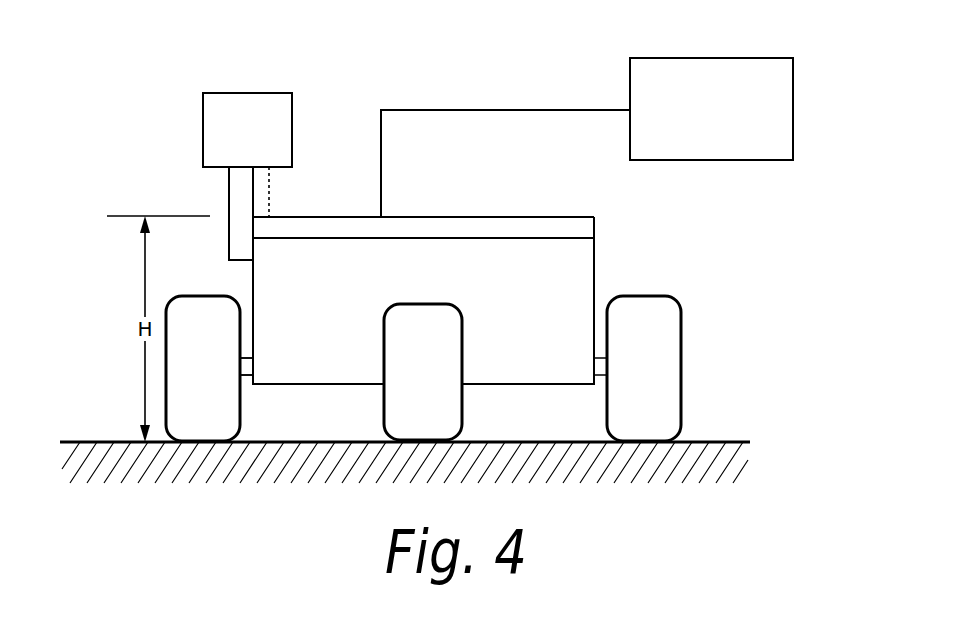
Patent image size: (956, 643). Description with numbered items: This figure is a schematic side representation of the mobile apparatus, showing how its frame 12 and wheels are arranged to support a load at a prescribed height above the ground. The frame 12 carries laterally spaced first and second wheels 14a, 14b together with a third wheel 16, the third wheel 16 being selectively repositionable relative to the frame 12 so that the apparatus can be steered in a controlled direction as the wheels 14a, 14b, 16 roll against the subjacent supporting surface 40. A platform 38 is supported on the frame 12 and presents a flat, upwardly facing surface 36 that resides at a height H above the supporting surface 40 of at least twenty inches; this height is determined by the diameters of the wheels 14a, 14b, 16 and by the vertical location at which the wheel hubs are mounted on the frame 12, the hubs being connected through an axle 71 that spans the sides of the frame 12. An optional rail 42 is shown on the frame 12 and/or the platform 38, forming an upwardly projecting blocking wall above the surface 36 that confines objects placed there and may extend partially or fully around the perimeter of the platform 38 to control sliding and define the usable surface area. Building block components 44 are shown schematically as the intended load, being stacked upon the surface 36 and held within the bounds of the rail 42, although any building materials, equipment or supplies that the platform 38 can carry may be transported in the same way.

The frame 12 is at (606, 281).
The first wheel 14a is at (195, 320).
The second wheel 14b is at (665, 342).
The third wheel 16 is at (420, 322).
The upwardly facing surface 36 is at (435, 216).
The platform 38 is at (524, 216).
The subjacent supporting surface 40 is at (96, 440).
The rail 42 is at (260, 150).
The building block components 44 is at (777, 101).
The axle 71 is at (245, 380).